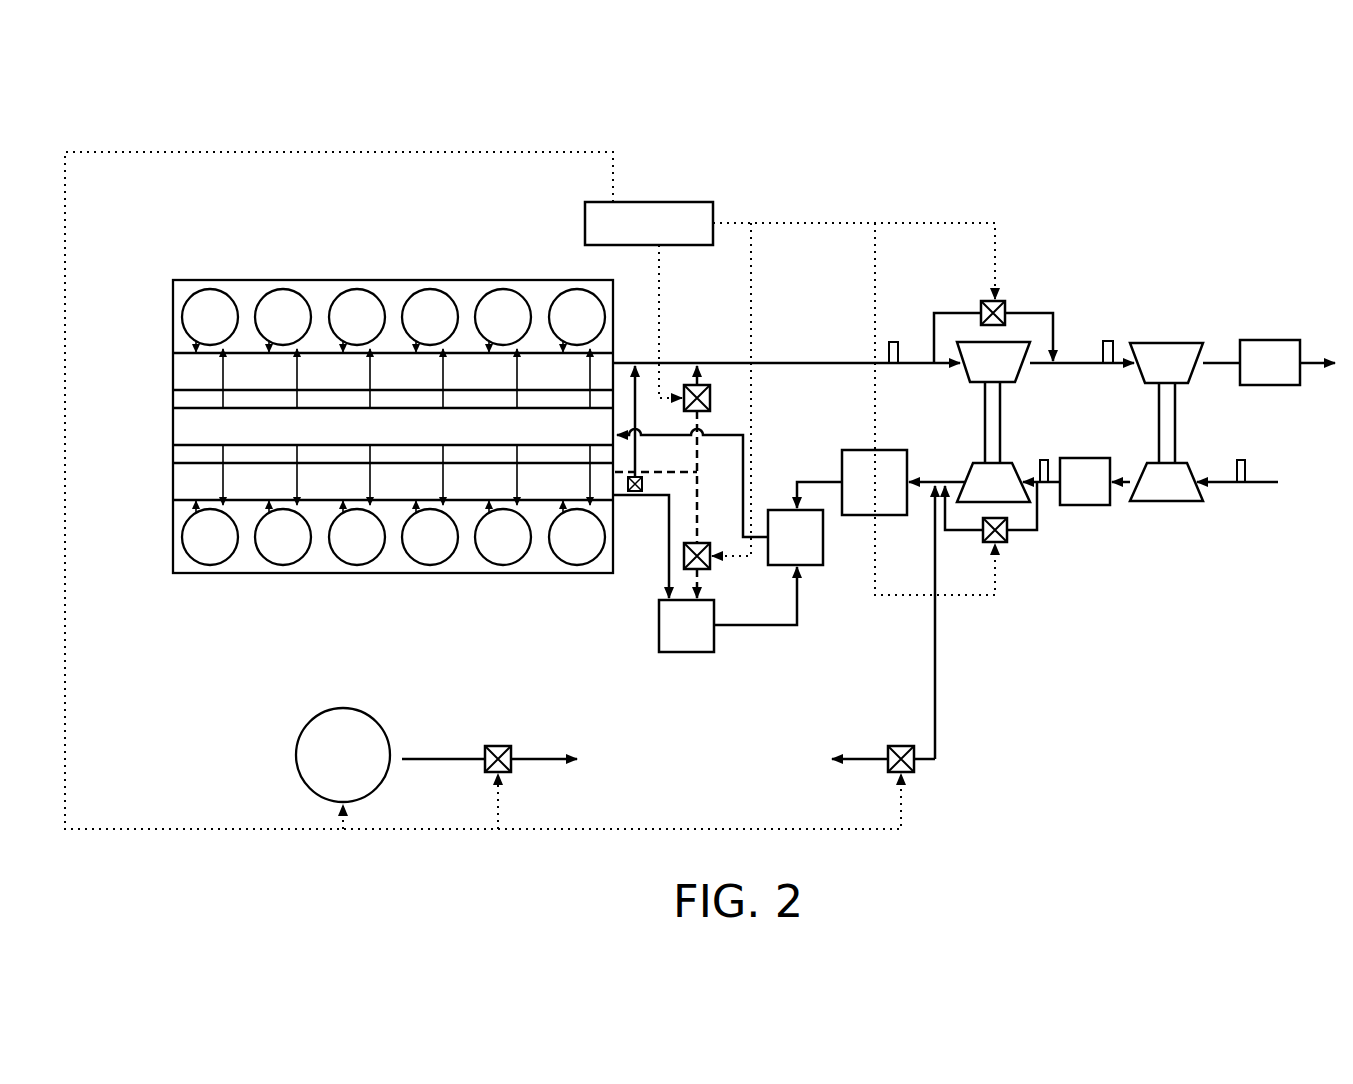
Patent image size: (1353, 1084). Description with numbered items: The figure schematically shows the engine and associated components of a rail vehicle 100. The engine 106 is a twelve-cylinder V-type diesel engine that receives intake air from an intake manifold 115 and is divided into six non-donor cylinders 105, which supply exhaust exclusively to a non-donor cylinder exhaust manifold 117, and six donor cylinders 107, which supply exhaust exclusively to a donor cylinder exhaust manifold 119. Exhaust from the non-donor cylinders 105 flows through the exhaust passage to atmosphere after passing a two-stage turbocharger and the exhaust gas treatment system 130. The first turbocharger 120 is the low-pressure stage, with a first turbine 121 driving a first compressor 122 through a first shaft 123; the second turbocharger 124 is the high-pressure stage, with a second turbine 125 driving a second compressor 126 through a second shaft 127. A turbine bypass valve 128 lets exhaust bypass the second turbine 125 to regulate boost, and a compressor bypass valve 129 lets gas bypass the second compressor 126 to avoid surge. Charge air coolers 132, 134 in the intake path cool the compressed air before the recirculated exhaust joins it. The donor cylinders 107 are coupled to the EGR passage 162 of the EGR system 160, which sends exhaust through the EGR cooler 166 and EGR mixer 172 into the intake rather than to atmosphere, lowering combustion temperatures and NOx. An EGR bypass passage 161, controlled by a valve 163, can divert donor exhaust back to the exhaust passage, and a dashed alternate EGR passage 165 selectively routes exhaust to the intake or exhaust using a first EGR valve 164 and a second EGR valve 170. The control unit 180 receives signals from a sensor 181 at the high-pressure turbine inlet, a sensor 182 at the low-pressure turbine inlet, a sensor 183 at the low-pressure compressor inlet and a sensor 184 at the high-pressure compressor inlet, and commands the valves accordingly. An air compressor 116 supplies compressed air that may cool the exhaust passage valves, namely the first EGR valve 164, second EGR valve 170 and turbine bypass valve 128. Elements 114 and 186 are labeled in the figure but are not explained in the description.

The rail vehicle 100 is at (1250, 130).
The non-donor cylinders 105 is at (352, 290).
The engine 106 is at (498, 268).
The donor cylinders 107 is at (355, 572).
The intake passage 114 is at (1220, 483).
The intake manifold 115 is at (393, 426).
The air compressor 116 is at (795, 362).
The non-donor cylinder exhaust manifold 117 is at (173, 375).
The donor cylinder exhaust manifold 119 is at (173, 483).
The first turbocharger 120 is at (1167, 520).
The first turbine 121 is at (1166, 363).
The first compressor 122 is at (1166, 482).
The first shaft 123 is at (1176, 445).
The second turbocharger 124 is at (1022, 548).
The second turbine 125 is at (993, 362).
The second compressor 126 is at (993, 482).
The second shaft 127 is at (1000, 445).
The turbine bypass valve 128 is at (1005, 310).
The compressor bypass valve 129 is at (983, 542).
The exhaust gas treatment system 130 is at (1270, 362).
The charge air cooler 132 is at (1085, 481).
The charge air cooler 134 is at (881, 482).
The EGR system 160 is at (818, 613).
The EGR bypass passage 161 is at (640, 400).
The EGR passage 162 is at (667, 523).
The valve 163 is at (640, 477).
The first EGR valve 164 is at (710, 398).
The alternate EGR passage 165 is at (699, 470).
The EGR cooler 166 is at (728, 609).
The second EGR valve 170 is at (708, 568).
The EGR mixer 172 is at (795, 537).
The control unit 180 is at (425, 759).
The sensor 181 is at (893, 342).
The sensor 182 is at (1108, 341).
The sensor 183 is at (1241, 460).
The sensor 184 is at (1044, 460).
The exhaust passage valve 186 is at (898, 745).